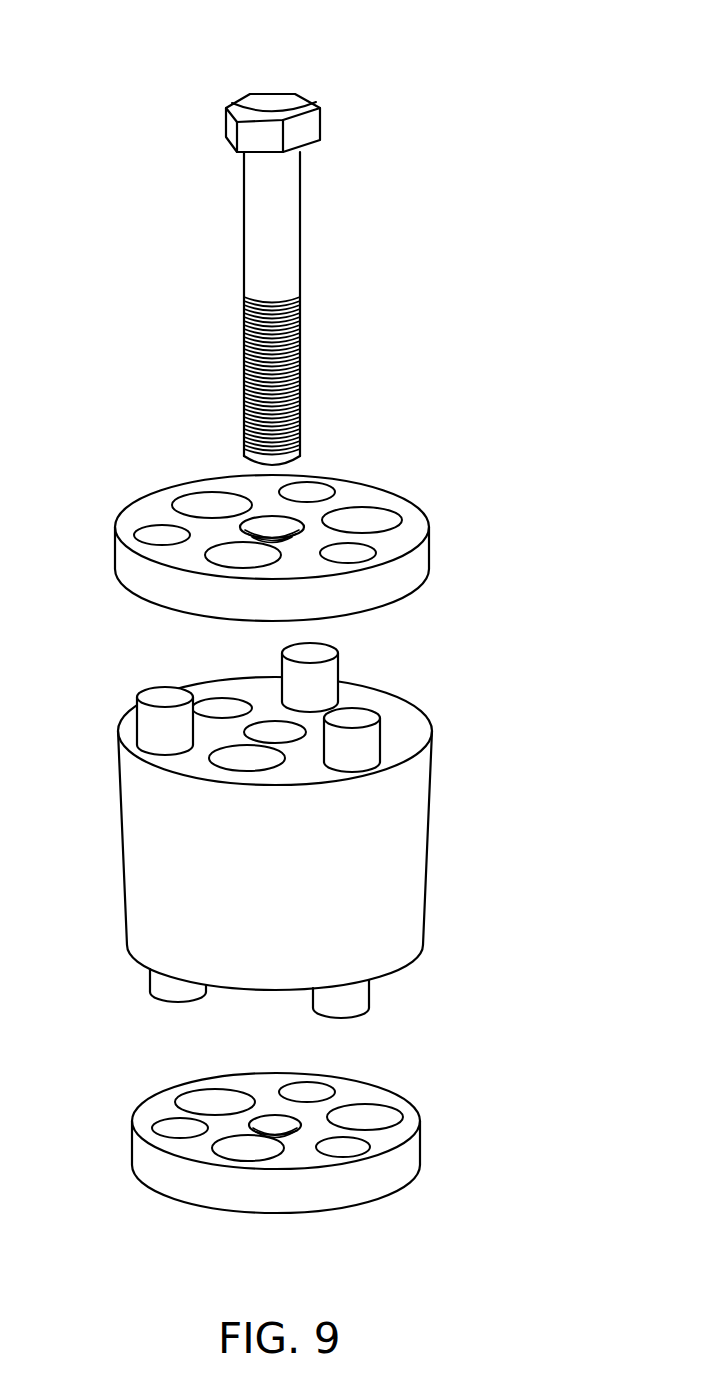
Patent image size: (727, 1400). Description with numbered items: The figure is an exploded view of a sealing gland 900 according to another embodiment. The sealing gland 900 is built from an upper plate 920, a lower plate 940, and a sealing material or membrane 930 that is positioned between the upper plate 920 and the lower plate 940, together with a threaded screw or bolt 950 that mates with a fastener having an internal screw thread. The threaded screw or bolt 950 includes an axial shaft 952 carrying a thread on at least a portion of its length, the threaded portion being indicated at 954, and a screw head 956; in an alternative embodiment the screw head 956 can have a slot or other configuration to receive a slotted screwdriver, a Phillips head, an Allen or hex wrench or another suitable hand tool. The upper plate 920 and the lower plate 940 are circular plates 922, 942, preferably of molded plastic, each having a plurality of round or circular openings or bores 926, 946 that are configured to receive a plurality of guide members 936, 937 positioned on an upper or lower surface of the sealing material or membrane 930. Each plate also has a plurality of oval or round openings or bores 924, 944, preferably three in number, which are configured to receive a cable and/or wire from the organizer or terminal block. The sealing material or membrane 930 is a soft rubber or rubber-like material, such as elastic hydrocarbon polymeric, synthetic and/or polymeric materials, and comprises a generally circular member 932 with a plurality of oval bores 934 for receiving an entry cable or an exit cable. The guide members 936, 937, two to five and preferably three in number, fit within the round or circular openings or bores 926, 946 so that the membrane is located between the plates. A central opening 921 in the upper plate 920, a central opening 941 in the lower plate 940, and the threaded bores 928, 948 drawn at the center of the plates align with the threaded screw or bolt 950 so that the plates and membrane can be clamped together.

The sealing gland 900 is at (367, 50).
The threaded screw or bolt 950 is at (366, 313).
The axial shaft 952 is at (302, 228).
The threaded portion 954 is at (302, 396).
The screw head 956 is at (318, 118).
The lower plate 940 is at (458, 532).
The central threaded aperture 941 is at (298, 522).
The circular plate 942 is at (405, 580).
The oval or round openings or bores 944 is at (365, 517).
The round or circular openings or bores 946 is at (150, 545).
The threaded bore 948 is at (269, 523).
The sealing material or membrane 930 is at (466, 840).
The generally circular member 932 is at (423, 907).
The oval bores 934 is at (395, 723).
The guide member 936 is at (339, 662).
The guide member 937 is at (370, 1003).
The upper plate 920 is at (440, 1163).
The central threaded aperture 921 is at (272, 1115).
The circular plate 922 is at (377, 1188).
The oval or round openings or bores 924 is at (403, 1120).
The round or circular openings or bores 926 is at (330, 1085).
The threaded bore 928 is at (286, 1130).